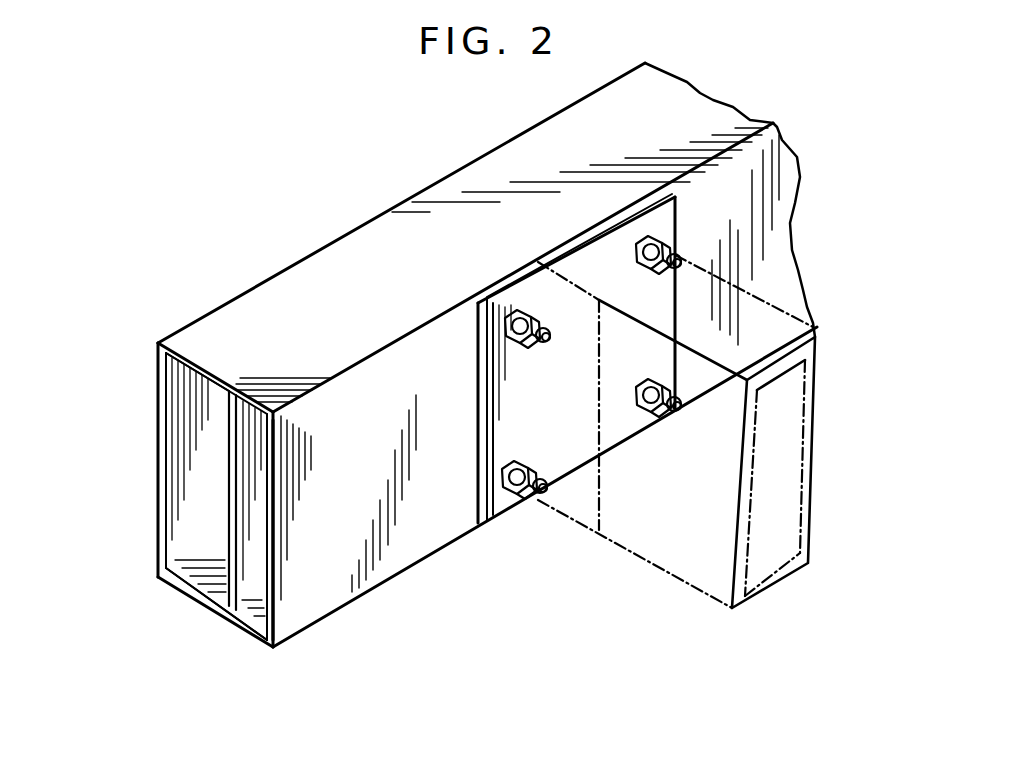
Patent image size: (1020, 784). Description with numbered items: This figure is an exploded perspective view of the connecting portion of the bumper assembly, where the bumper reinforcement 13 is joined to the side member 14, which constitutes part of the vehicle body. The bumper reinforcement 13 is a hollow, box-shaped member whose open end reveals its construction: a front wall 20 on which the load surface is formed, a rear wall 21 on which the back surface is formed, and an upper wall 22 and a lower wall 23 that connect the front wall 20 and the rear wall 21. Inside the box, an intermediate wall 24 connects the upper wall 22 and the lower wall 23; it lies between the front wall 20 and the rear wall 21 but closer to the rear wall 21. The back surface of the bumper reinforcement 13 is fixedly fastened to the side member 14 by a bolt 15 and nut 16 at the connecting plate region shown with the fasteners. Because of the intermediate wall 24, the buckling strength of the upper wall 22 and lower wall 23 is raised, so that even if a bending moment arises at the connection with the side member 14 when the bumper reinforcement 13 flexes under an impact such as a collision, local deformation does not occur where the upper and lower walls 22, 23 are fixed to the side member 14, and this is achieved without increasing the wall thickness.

The bumper reinforcement 13 is at (362, 222).
The side member 14 is at (665, 553).
The bolt 15 is at (537, 496).
The nut 16 is at (478, 487).
The front wall 20 is at (157, 430).
The rear wall 21 is at (277, 553).
The upper wall 22 is at (208, 372).
The lower wall 23 is at (192, 597).
The intermediate wall 24 is at (227, 508).